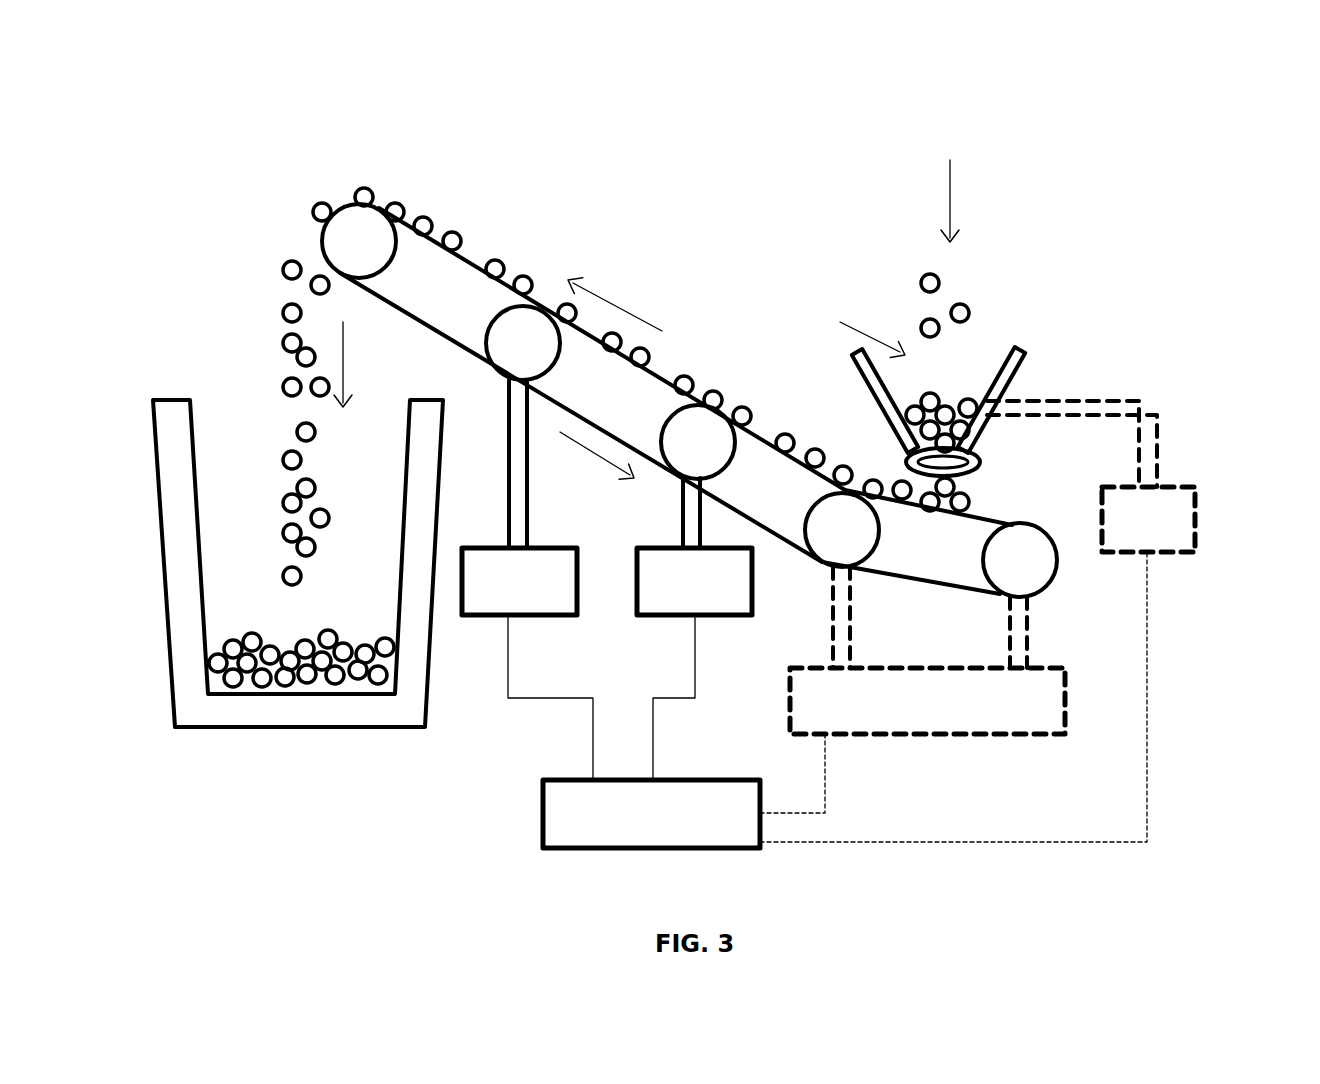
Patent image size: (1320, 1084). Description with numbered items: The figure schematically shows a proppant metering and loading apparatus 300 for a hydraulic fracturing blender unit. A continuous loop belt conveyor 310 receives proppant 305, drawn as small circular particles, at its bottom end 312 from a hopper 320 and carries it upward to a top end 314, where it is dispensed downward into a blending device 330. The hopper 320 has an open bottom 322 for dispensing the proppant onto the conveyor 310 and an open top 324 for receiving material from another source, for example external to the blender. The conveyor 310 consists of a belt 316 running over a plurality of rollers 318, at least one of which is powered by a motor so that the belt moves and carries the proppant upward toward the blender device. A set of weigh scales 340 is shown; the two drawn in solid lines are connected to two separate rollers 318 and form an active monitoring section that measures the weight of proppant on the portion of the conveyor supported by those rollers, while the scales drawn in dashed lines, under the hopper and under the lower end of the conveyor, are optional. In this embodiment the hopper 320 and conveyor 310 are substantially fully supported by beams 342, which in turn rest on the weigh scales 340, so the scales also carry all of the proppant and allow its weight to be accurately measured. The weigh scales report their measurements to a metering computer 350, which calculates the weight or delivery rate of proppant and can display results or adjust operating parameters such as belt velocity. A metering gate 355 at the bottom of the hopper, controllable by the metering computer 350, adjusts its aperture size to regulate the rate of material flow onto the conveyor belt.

The proppant metering and loading apparatus 300 is at (207, 70).
The proppant 305 is at (622, 423).
The continuous loop belt conveyor 310 is at (425, 272).
The bottom end 312 is at (1048, 522).
The top end 314 is at (337, 180).
The belt 316 is at (645, 379).
The rollers 318 is at (352, 243).
The hopper 320 is at (969, 361).
The open bottom 322 is at (912, 450).
The open top 324 is at (849, 335).
The blending device 330 is at (298, 522).
The weigh scales 340 is at (842, 569).
The beams 342 is at (510, 540).
The metering computer 350 is at (827, 700).
The metering gate 355 is at (987, 472).